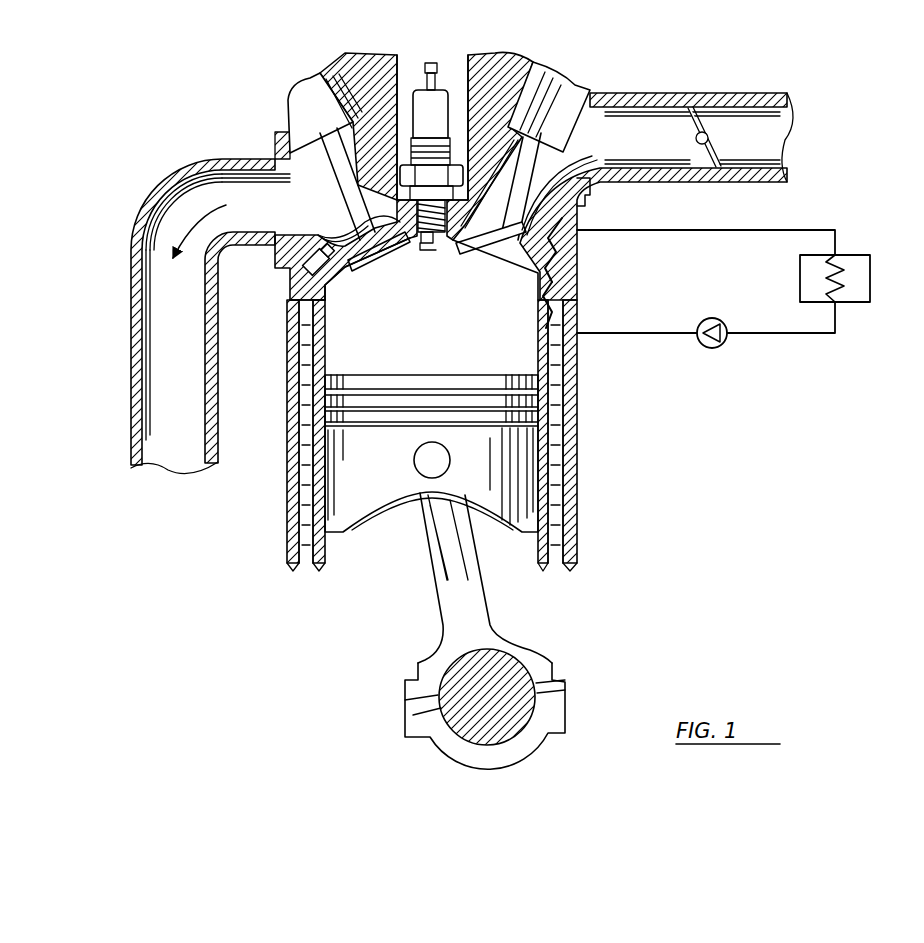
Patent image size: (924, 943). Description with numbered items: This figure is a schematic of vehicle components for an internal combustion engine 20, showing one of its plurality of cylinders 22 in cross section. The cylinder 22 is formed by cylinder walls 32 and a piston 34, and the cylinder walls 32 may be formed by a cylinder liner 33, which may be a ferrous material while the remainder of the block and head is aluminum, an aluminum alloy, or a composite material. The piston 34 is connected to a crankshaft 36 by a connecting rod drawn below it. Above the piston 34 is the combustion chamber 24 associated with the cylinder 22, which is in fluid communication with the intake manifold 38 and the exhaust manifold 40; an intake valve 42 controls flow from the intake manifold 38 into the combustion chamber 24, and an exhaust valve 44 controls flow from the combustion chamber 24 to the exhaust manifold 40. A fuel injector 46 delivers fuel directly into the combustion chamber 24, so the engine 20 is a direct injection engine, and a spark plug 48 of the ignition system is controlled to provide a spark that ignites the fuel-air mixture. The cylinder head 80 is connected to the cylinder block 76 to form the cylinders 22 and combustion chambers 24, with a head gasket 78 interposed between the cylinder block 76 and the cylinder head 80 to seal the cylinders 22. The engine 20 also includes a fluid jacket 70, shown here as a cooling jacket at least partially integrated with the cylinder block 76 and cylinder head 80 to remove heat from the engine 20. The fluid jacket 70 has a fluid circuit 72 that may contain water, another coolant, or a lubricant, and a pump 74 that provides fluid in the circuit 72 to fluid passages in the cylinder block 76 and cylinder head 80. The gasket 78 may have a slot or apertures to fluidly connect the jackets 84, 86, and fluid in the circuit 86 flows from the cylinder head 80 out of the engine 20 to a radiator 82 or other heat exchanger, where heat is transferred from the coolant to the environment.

The internal combustion engine 20 is at (248, 68).
The cylinder 22 is at (402, 321).
The combustion chamber 24 is at (487, 335).
The cylinder walls 32 is at (578, 432).
The cylinder liner 33 is at (538, 335).
The piston 34 is at (480, 462).
The crankshaft 36 is at (420, 705).
The intake manifold 38 is at (650, 82).
The exhaust manifold 40 is at (150, 168).
The intake valve 42 is at (504, 250).
The exhaust valve 44 is at (352, 222).
The fuel injector 46 is at (306, 270).
The spark plug 48 is at (440, 90).
The fluid jacket 70 is at (716, 290).
The fluid circuit 72 is at (800, 230).
The pump 74 is at (712, 348).
The cylinder block 76 is at (577, 458).
The head gasket 78 is at (302, 300).
The cylinder head 80 is at (580, 222).
The radiator 82 is at (862, 255).
The jacket 84 is at (566, 325).
The jacket 86 is at (563, 245).